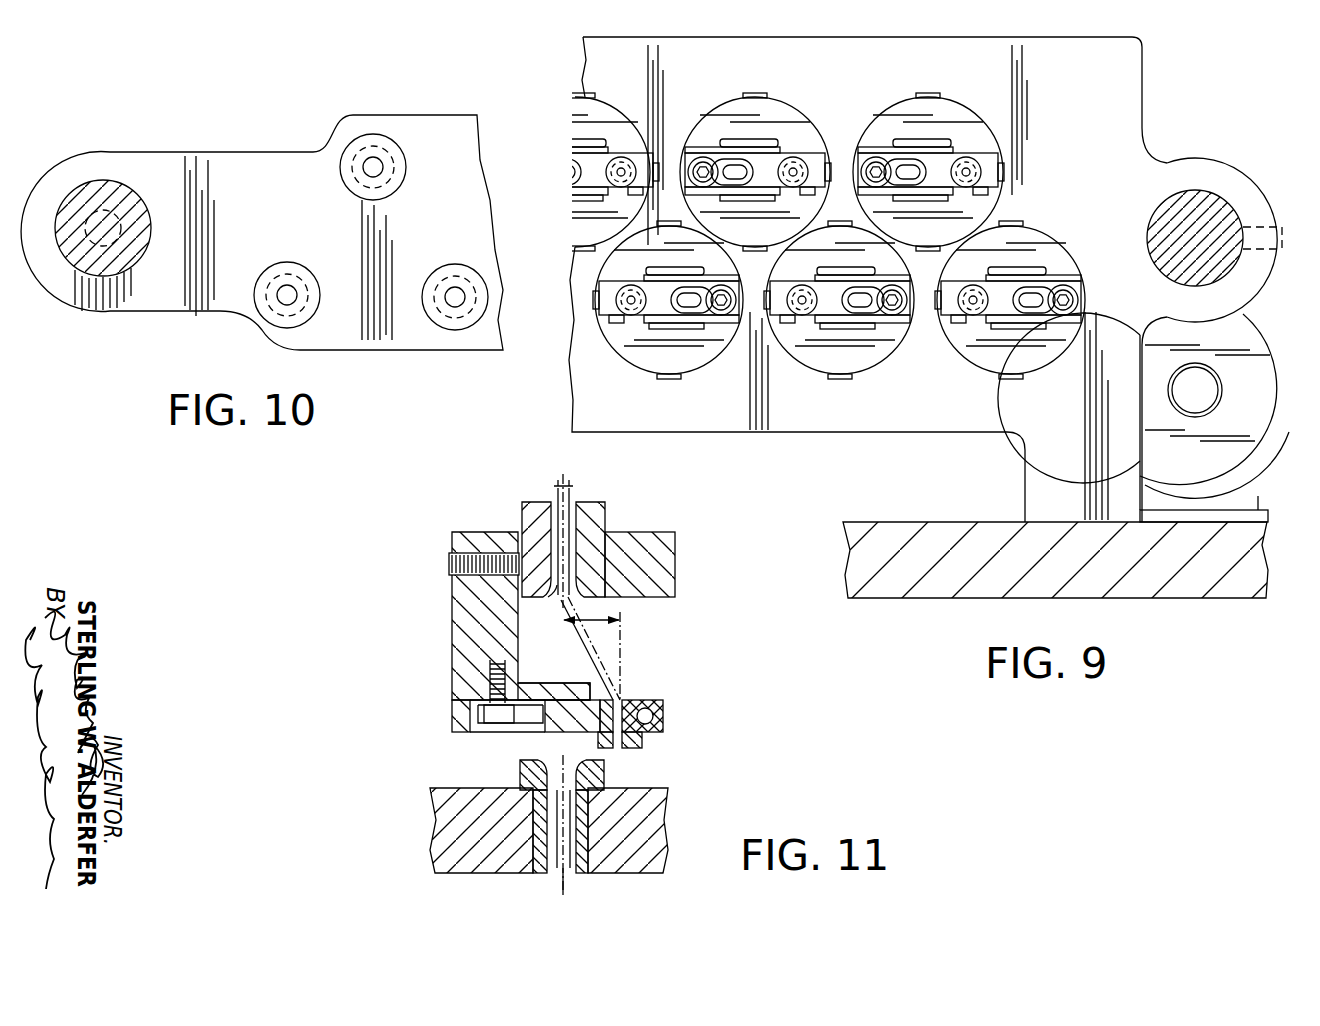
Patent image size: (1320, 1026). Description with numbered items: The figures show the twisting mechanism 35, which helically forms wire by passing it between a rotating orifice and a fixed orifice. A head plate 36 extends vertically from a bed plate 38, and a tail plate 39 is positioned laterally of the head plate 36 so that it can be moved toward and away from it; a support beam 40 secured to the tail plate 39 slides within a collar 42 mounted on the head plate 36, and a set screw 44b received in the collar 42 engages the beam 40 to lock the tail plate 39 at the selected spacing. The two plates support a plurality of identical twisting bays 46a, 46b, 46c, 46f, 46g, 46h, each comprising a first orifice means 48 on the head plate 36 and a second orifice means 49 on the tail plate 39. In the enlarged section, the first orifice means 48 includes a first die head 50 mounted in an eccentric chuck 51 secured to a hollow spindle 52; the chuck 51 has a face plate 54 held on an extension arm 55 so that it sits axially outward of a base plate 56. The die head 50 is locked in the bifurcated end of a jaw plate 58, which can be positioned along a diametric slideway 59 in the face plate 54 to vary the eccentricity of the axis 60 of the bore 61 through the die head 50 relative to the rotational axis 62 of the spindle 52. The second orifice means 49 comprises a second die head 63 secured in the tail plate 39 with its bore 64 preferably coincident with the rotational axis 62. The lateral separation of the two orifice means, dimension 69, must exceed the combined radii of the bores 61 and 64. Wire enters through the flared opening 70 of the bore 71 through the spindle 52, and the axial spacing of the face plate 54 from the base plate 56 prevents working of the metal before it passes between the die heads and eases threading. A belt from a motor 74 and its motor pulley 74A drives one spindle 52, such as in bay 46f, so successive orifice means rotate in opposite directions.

In FIG. 9, the twisting mechanism 35 is at (545, 62).
In FIG. 9, the head plate 36 is at (973, 52).
In FIG. 9, the bed plate 38 is at (1240, 583).
In FIG. 10, the tail plate 39 is at (268, 170).
In FIG. 11, the tail plate 39 is at (450, 822).
In FIG. 9, the support beam 40 is at (1175, 222).
In FIG. 10, the support beam 40 is at (112, 188).
In FIG. 9, the collar 42 is at (1213, 165).
In FIG. 9, the set screw 44b is at (1282, 215).
In FIG. 9, the twisting bay 46a is at (975, 100).
In FIG. 9, the twisting bay 46b is at (793, 96).
In FIG. 9, the twisting bay 46c is at (620, 97).
In FIG. 9, the twisting bay 46f is at (1028, 382).
In FIG. 9, the twisting bay 46g is at (868, 375).
In FIG. 9, the twisting bay 46h is at (692, 372).
In FIG. 11, the first orifice means 48 is at (638, 647).
In FIG. 11, the second orifice means 49 is at (628, 772).
In FIG. 9, the first die head 50 is at (982, 167).
In FIG. 11, the first die head 50 is at (645, 737).
In FIG. 9, the eccentric chuck 51 is at (700, 199).
In FIG. 11, the eccentric chuck 51 is at (458, 655).
In FIG. 9, the hollow spindle 52 is at (920, 202).
In FIG. 11, the hollow spindle 52 is at (598, 517).
In FIG. 9, the face plate 54 is at (916, 152).
In FIG. 11, the face plate 54 is at (553, 693).
In FIG. 11, the extension arm 55 is at (462, 617).
In FIG. 9, the base plate 56 is at (978, 207).
In FIG. 11, the base plate 56 is at (660, 557).
In FIG. 9, the jaw plate 58 is at (942, 162).
In FIG. 11, the jaw plate 58 is at (552, 730).
In FIG. 9, the diametric slideway 59 is at (858, 165).
In FIG. 11, the diametric slideway 59 is at (452, 712).
In FIG. 11, the axis of the bore 60 is at (622, 665).
In FIG. 9, the bore 61 is at (1005, 184).
In FIG. 11, the bore 61 is at (622, 693).
In FIG. 11, the rotational axis 62 is at (560, 617).
In FIG. 10, the second die head 63 is at (395, 183).
In FIG. 11, the second die head 63 is at (525, 773).
In FIG. 10, the bore 64 is at (373, 167).
In FIG. 11, the bore 64 is at (565, 868).
In FIG. 11, the dimension 69 is at (620, 620).
In FIG. 11, the flared opening 70 is at (555, 600).
In FIG. 11, the bore 71 is at (556, 505).
In FIG. 9, the motor 74 is at (1180, 490).
In FIG. 9, the motor pulley 74A is at (1240, 448).